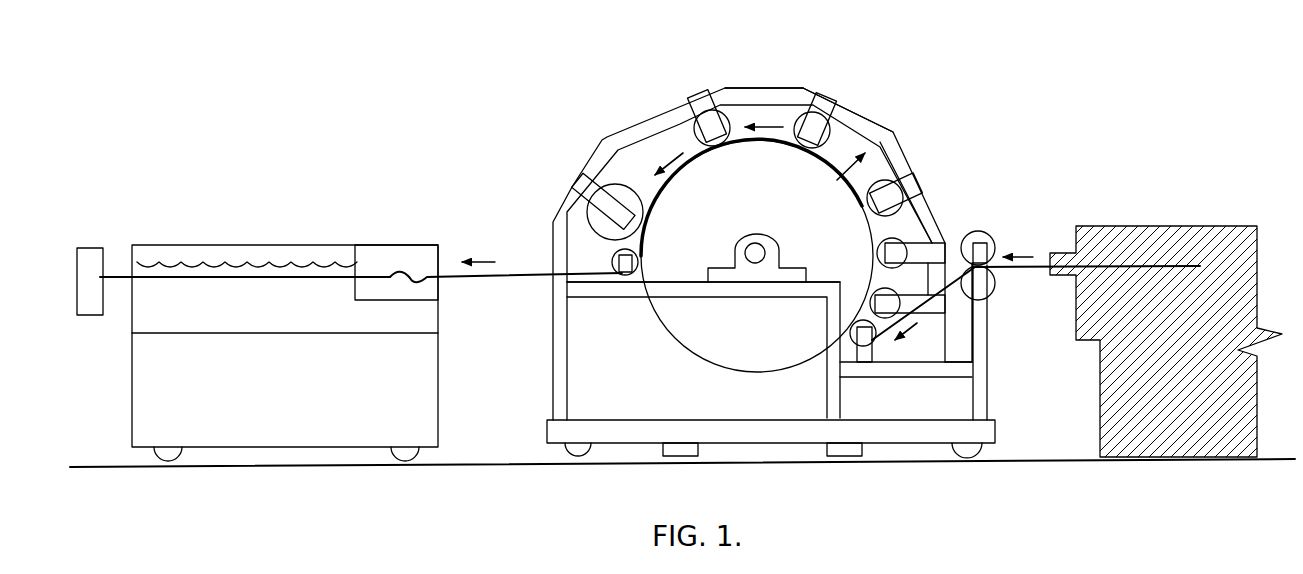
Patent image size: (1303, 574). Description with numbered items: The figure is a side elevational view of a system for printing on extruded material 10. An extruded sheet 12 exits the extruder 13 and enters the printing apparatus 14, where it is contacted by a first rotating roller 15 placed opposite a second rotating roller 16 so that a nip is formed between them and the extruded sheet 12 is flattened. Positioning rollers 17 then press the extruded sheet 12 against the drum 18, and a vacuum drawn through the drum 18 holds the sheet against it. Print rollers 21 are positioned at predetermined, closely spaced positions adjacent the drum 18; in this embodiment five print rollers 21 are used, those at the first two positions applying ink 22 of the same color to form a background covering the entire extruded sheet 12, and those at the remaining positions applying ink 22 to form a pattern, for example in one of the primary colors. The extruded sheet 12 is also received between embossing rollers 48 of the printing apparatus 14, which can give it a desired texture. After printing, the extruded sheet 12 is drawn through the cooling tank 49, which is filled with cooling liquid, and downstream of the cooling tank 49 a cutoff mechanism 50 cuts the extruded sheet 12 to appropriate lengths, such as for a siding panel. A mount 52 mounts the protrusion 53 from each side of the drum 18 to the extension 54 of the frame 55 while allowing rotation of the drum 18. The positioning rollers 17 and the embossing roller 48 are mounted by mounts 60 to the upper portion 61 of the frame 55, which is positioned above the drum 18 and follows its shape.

The system for printing on extruded material 10 is at (422, 108).
The extruded sheet 12 is at (1042, 263).
The extruder 13 is at (1163, 225).
The printing apparatus 14 is at (712, 66).
The first rotating roller 15 is at (993, 298).
The second rotating roller 16 is at (978, 232).
The positioning rollers 17 is at (622, 276).
The drum 18 is at (762, 372).
The print rollers 21 is at (731, 110).
The ink 22 is at (872, 240).
The embossing rollers 48 is at (620, 186).
The cooling tank 49 is at (148, 245).
The cutoff mechanism 50 is at (93, 247).
The mount 52 is at (744, 238).
The protrusion 53 is at (767, 243).
The extension 54 is at (797, 290).
The frame 55 is at (891, 113).
The mounts 60 is at (590, 180).
The upper portion 61 is at (862, 112).